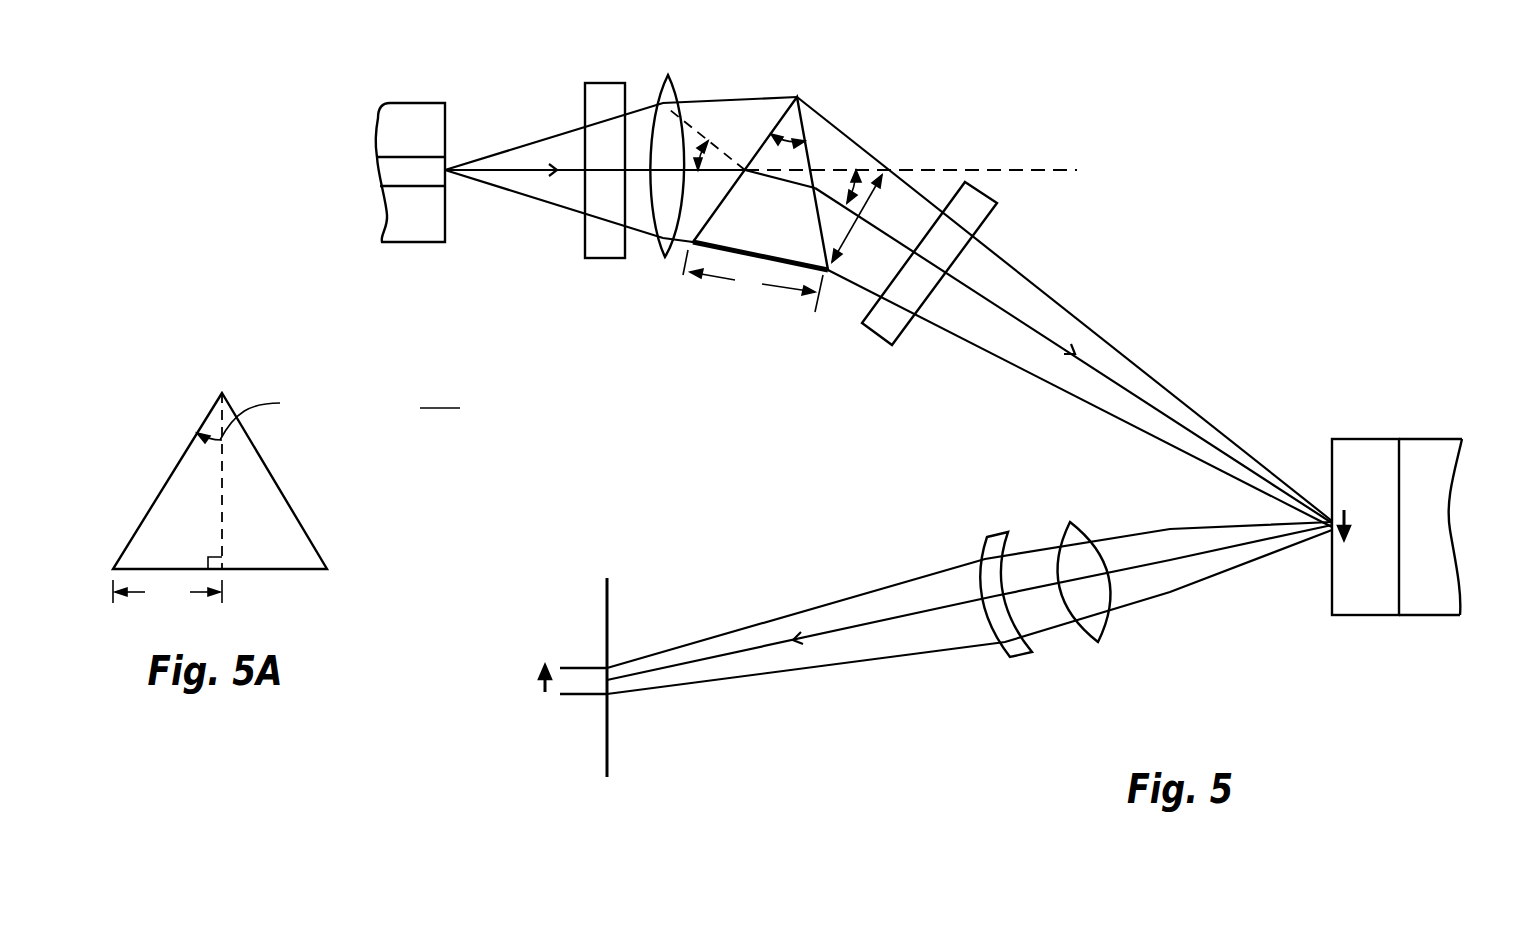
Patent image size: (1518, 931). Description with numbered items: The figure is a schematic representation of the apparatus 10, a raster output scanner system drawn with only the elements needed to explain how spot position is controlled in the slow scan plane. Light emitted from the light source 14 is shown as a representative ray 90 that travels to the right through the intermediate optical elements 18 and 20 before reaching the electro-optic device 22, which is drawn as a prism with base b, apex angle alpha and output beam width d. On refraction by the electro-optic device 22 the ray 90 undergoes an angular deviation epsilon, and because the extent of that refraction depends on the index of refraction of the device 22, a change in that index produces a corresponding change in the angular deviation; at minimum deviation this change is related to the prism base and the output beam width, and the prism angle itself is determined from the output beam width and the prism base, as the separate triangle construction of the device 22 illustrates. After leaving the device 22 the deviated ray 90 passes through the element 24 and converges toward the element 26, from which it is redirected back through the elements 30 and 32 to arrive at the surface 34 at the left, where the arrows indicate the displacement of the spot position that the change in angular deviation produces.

In FIG. 5, the apparatus 10 is at (1181, 194).
In FIG. 5, the light source 14 is at (415, 242).
In FIG. 5, the optical plate / filter 18 is at (600, 258).
In FIG. 5, the collimating lens 20 is at (657, 258).
In FIG. 5, the electro-optic device 22 is at (797, 97).
In FIG. 5A, the electro-optic device 22 is at (293, 503).
In FIG. 5, the optical plate / window 24 is at (880, 330).
In FIG. 5, the scanning element / mirror block 26 is at (1370, 439).
In FIG. 5, the focusing lens 30 is at (1072, 522).
In FIG. 5, the meniscus lens 32 is at (990, 537).
In FIG. 5, the image plane / target surface 34 is at (607, 605).
In FIG. 5, the representative ray 90 is at (516, 168).